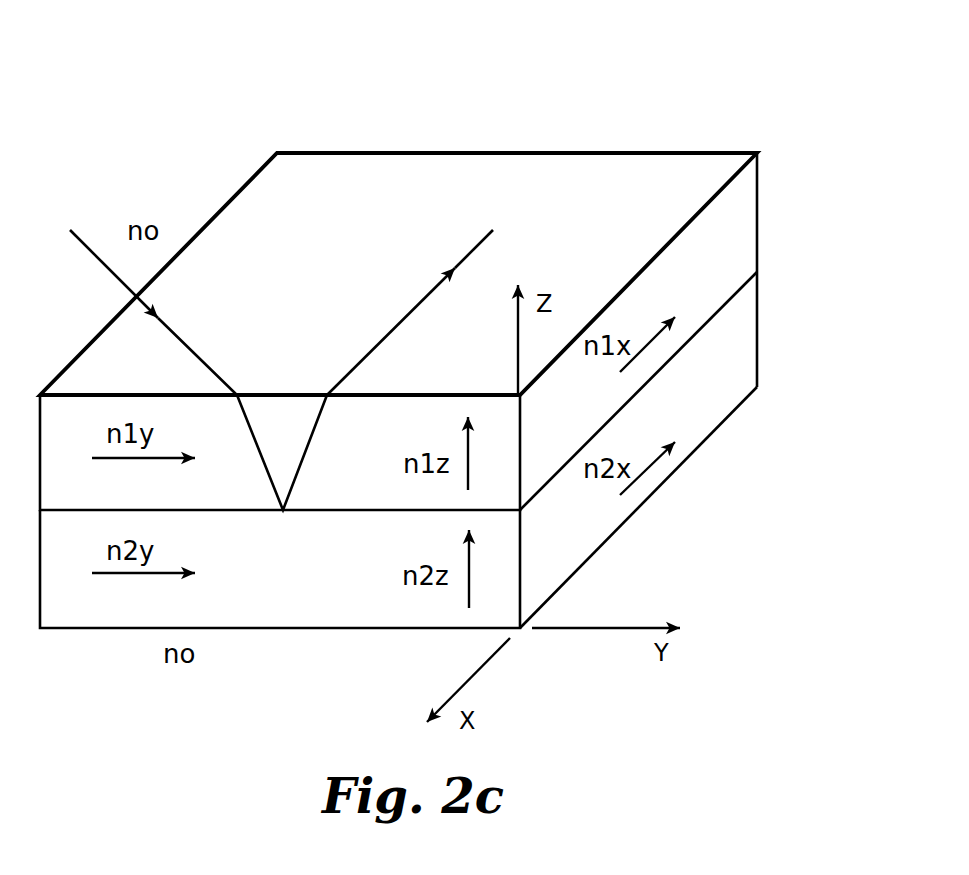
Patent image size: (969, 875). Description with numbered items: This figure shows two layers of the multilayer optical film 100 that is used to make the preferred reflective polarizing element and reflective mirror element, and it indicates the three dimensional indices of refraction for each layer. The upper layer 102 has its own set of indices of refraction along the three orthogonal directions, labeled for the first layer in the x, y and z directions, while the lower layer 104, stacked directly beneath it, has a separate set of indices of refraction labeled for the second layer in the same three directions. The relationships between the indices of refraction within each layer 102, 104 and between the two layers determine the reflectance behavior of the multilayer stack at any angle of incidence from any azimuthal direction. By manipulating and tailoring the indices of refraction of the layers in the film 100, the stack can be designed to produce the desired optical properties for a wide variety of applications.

The multilayer optical film 100 is at (500, 76).
The layer 102 is at (757, 210).
The layer 104 is at (757, 330).